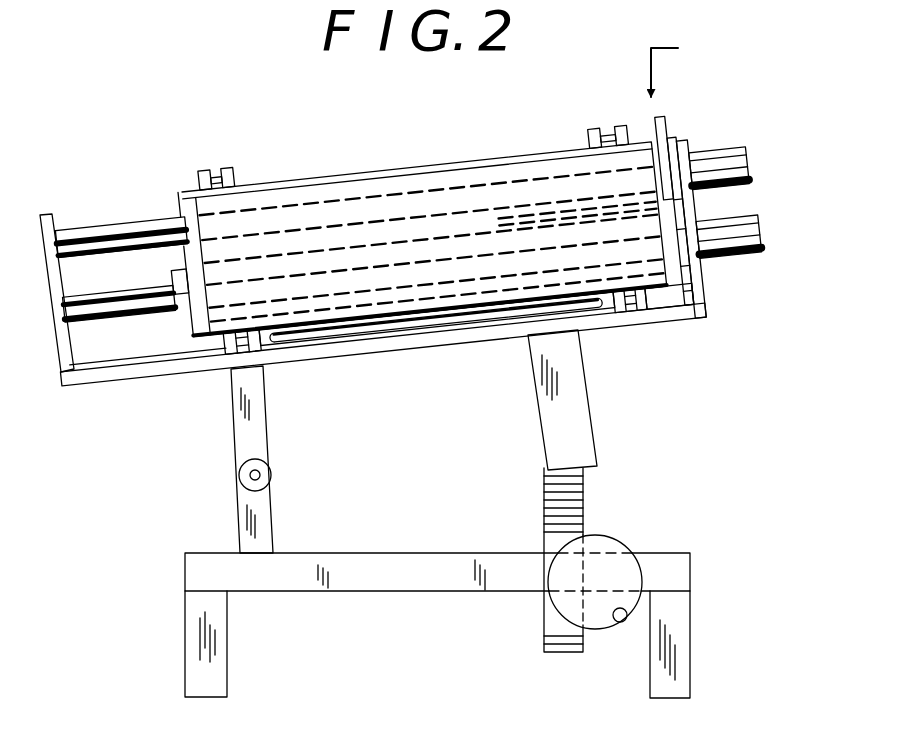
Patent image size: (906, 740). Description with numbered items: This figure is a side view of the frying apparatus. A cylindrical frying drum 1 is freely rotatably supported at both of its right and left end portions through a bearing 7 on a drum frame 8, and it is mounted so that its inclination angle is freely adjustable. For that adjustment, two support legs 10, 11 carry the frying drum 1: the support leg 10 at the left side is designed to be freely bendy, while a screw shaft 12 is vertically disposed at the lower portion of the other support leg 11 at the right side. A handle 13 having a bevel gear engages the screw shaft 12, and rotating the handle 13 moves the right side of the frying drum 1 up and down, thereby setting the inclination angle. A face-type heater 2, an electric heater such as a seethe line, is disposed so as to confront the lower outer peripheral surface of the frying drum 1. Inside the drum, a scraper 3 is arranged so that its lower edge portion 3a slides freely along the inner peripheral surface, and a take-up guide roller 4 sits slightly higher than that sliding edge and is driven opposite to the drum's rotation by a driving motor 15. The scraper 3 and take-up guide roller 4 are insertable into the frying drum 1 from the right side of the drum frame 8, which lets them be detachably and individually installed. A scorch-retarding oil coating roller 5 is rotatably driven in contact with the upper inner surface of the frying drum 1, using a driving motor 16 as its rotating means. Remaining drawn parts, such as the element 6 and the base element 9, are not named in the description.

The frying drum 1 is at (433, 178).
The heater 2 is at (450, 322).
The scraper 3 is at (363, 407).
The lower edge portion 3a is at (177, 322).
The take-up guide roller 4 is at (771, 216).
The scorch-retarding oil coating roller 5 is at (86, 229).
The thin plate 6 is at (668, 127).
The bearing 7 is at (240, 353).
The drum frame 8 is at (673, 315).
The base frame 9 is at (381, 590).
The support leg 10 is at (237, 513).
The support leg 11 is at (580, 432).
The screw shaft 12 is at (583, 488).
The handle 13 is at (605, 630).
The driving motor 15 is at (730, 232).
The driving motor 16 is at (723, 150).